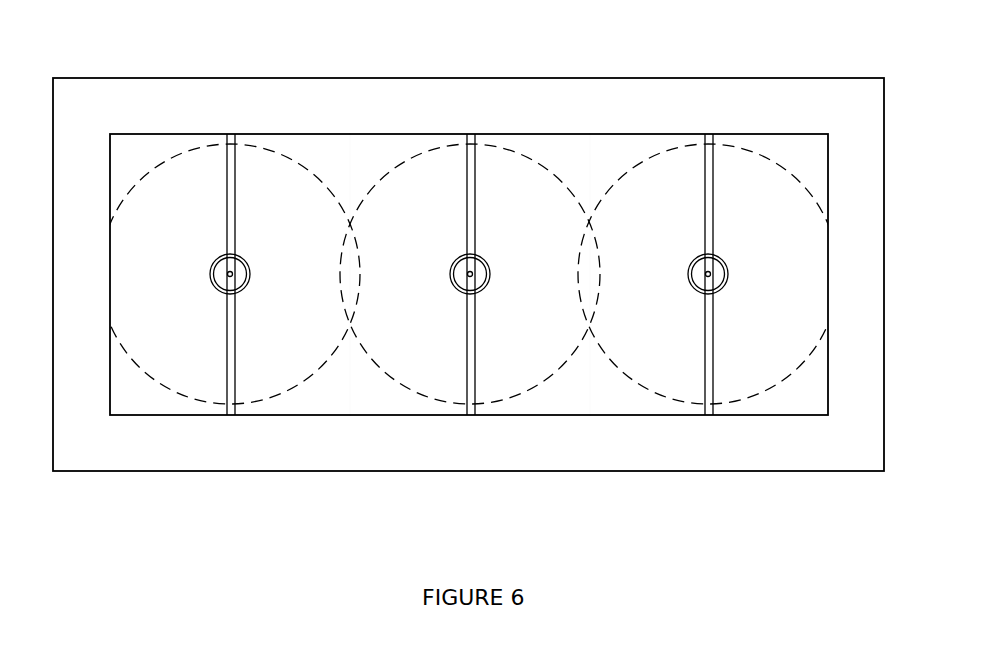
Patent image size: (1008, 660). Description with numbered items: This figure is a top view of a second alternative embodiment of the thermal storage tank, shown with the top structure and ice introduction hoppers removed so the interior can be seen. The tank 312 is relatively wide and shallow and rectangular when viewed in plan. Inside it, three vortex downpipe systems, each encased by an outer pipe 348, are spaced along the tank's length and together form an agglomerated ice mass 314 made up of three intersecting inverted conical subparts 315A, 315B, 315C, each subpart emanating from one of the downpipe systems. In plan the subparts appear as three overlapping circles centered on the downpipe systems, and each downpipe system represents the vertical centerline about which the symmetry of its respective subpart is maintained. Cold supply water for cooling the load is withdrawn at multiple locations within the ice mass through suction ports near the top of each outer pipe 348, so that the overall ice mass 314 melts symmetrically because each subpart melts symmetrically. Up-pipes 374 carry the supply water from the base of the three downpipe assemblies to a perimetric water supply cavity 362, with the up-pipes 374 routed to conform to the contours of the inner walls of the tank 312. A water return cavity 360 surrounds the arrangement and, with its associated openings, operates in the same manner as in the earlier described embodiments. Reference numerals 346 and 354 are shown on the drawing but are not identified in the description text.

The water return cavity 360 is at (287, 78).
The perimetric water supply cavity 362 is at (468, 274).
The tank 312 is at (778, 133).
The agglomerated ice mass 314 is at (582, 192).
The up-pipes 374 is at (237, 196).
The central contact 346 is at (232, 274).
The outer pipe 348 is at (244, 270).
The outer ring electrode 354 is at (247, 287).
The first ice mass subpart 315A is at (275, 395).
The second ice mass subpart 315B is at (515, 395).
The third ice mass subpart 315C is at (757, 395).